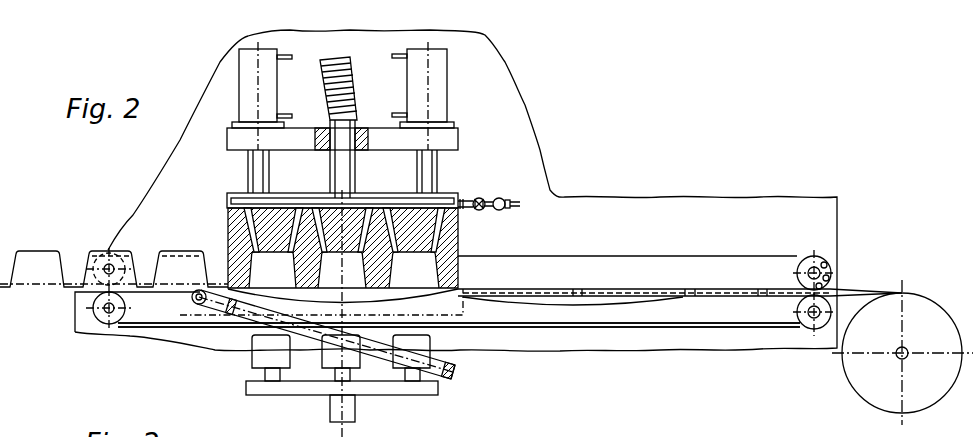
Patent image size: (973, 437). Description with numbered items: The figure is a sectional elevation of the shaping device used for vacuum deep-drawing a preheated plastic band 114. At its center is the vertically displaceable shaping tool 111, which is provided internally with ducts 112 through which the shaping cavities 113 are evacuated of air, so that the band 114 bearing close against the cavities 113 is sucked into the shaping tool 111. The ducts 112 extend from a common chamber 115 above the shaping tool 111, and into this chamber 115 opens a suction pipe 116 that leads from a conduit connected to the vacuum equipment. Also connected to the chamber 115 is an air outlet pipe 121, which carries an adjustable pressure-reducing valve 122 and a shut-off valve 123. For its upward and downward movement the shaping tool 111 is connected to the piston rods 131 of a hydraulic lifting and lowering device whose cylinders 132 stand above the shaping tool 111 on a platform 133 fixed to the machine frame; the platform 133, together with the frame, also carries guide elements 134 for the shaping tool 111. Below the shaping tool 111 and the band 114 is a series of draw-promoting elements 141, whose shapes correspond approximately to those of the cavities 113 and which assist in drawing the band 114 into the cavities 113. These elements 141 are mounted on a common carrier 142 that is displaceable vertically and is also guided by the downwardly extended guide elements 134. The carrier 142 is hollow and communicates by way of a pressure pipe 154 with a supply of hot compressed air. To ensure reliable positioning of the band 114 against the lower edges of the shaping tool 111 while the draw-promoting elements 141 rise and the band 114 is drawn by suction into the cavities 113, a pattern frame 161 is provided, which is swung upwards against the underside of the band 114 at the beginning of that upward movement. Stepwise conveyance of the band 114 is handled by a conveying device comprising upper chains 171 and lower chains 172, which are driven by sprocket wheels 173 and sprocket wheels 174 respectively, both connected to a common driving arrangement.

The shaping tool 111 is at (458, 243).
The ducts 112 is at (229, 229).
The shaping cavities 113 is at (380, 269).
The preheated band 114 is at (397, 299).
The common chamber 115 is at (352, 200).
The suction pipe 116 is at (336, 186).
The air outlet pipe 121 is at (463, 209).
The adjustable pressure-reducing valve 122 is at (483, 199).
The shut-off valve 123 is at (503, 209).
The piston rods 131 is at (265, 171).
The cylinders 132 is at (277, 84).
The platform 133 is at (452, 142).
The guide elements 134 is at (248, 170).
The draw-promoting elements 141 is at (430, 355).
The common carrier 142 is at (390, 395).
The pressure pipe 154 is at (330, 413).
The pattern frame 161 is at (213, 304).
The upper chains 171 is at (632, 256).
The lower chains 172 is at (620, 328).
The sprocket wheels 173 is at (808, 258).
The sprocket wheels 174 is at (810, 328).